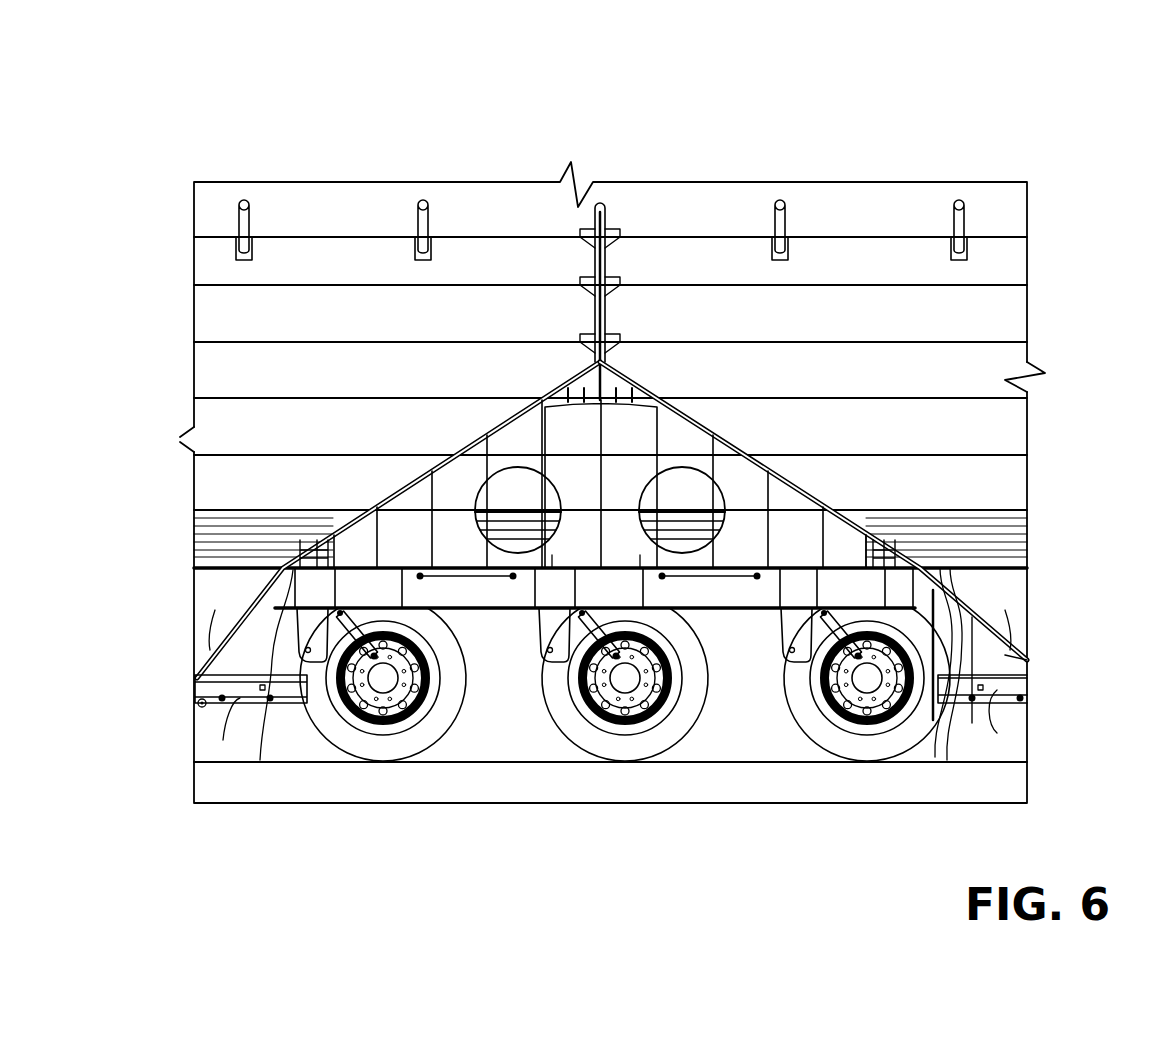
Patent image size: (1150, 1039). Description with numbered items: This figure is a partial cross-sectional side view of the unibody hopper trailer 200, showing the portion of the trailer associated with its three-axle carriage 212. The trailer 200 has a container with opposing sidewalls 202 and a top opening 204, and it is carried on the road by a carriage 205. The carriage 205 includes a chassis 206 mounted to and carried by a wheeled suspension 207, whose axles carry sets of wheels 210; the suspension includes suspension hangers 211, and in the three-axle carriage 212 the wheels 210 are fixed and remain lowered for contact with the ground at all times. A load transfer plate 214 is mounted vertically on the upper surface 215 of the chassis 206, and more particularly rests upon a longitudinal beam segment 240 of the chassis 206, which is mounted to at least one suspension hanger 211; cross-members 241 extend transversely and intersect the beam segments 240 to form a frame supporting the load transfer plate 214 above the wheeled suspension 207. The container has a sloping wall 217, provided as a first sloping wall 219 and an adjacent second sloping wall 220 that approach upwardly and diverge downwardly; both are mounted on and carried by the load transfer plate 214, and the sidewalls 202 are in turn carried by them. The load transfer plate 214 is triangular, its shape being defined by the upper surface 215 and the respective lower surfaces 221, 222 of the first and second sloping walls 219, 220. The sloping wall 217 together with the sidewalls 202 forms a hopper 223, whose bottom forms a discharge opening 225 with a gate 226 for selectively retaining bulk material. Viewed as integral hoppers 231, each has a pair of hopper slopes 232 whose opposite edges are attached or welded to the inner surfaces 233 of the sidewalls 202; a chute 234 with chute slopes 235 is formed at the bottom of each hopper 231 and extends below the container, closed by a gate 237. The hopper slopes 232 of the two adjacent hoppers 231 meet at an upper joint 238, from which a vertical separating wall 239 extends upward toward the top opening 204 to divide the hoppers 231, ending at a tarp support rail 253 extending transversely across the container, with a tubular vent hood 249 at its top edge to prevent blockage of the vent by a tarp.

The unibody hopper trailer 200 is at (612, 436).
The sidewall 202 is at (355, 262).
The top opening 204 is at (540, 203).
The carriage 205 is at (1076, 671).
The chassis 206 is at (478, 595).
The wheeled suspension 207 is at (940, 730).
The wheel 210 is at (388, 748).
The suspension hanger 211 is at (547, 712).
The three-axle carriage 212 is at (1005, 660).
The load transfer plate 214 is at (735, 505).
The upper surface 215 is at (851, 555).
The sloping wall 217 is at (612, 520).
The first sloping wall 219 is at (418, 472).
The second sloping wall 220 is at (812, 488).
The lower surface of first sloping wall 221 is at (530, 437).
The lower surface of second sloping wall 222 is at (677, 437).
The hopper 223 is at (638, 163).
The discharge opening 225 is at (223, 548).
The gate 226 is at (608, 719).
The integral hopper 231 is at (638, 163).
The hopper slope 232 is at (612, 520).
The inner surface of sidewall 233 is at (740, 256).
The chute 234 is at (611, 609).
The chute slope 235 is at (216, 612).
The gate 237 is at (230, 705).
The upper joint 238 is at (600, 203).
The vertical separating wall 239 is at (655, 233).
The longitudinal beam segment 240 is at (725, 595).
The cross-member 241 is at (308, 628).
The tubular vent hood 249 is at (655, 233).
The tarp support rail 253 is at (960, 200).